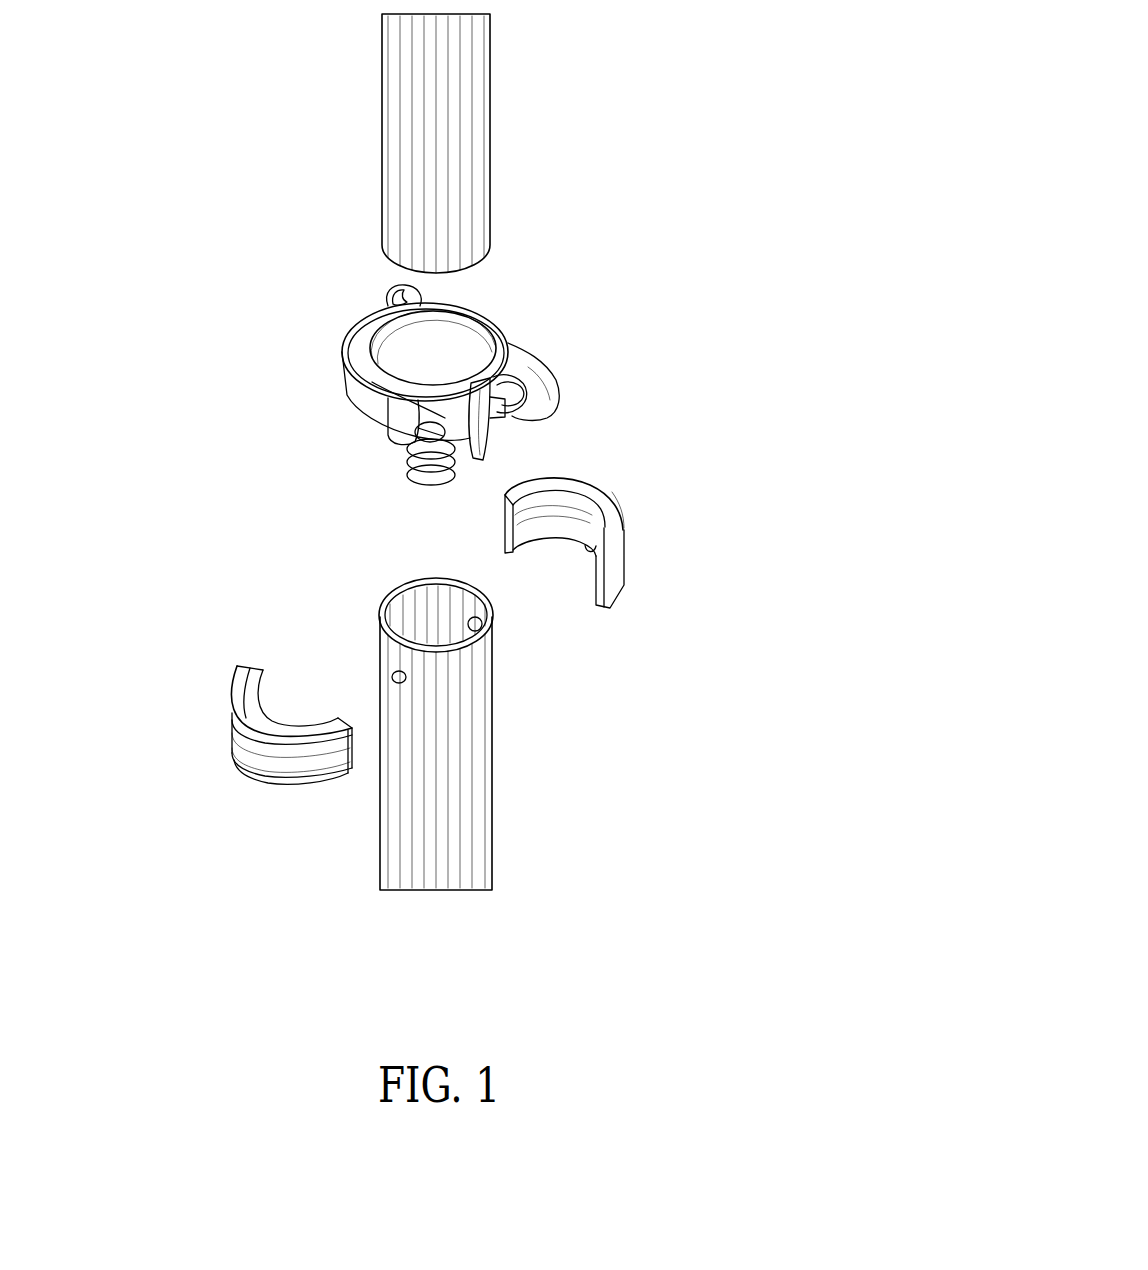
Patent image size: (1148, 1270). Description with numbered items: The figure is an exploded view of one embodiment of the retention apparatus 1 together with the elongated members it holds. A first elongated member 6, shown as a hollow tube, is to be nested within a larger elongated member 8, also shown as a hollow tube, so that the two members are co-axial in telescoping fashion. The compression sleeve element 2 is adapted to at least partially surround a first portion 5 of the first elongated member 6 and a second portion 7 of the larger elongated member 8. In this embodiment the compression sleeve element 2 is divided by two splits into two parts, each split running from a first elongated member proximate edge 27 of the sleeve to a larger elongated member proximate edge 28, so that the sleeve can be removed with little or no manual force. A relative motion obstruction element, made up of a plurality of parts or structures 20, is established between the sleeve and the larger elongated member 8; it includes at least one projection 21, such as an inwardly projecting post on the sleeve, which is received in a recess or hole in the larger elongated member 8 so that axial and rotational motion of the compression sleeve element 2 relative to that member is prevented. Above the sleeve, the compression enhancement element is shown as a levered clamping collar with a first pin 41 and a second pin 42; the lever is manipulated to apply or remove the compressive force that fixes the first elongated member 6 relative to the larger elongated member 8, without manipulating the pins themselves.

The retention apparatus 1 is at (734, 585).
The compression sleeve element 2 is at (612, 598).
The first portion 5 is at (358, 241).
The first elongated member 6 is at (490, 152).
The second portion 7 is at (540, 649).
The larger elongated member 8 is at (467, 803).
The plurality of parts or structures 20 is at (588, 553).
The projection 21 is at (473, 618).
The first elongated member proximate edge 27 is at (607, 502).
The larger elongated member proximate edge 28 is at (305, 785).
The first pin 41 is at (512, 418).
The second pin 42 is at (425, 435).